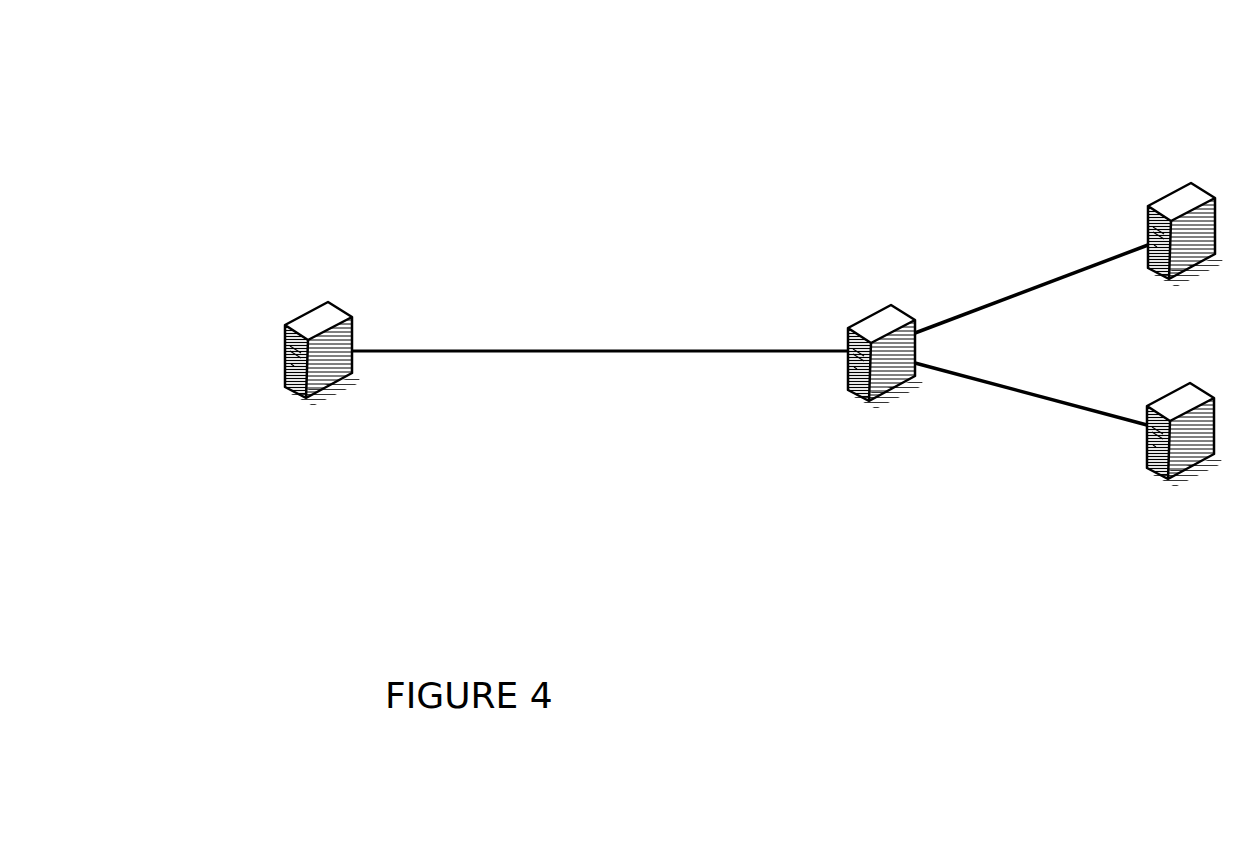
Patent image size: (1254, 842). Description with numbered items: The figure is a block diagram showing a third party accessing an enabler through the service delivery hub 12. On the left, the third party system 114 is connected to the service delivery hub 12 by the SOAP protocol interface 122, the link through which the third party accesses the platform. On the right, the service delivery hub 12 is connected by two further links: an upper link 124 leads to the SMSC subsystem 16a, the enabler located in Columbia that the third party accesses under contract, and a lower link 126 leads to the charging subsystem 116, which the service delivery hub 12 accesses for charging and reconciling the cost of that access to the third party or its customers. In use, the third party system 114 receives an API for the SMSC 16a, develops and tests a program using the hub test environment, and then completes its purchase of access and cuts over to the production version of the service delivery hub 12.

The third party system 114 is at (312, 318).
The service delivery hub 12 is at (870, 313).
The SMSC subsystem 16a is at (1187, 193).
The charging subsystem 116 is at (1147, 448).
The SOAP protocol interface 122 is at (617, 357).
The communication link 124 is at (1097, 258).
The communication link 126 is at (995, 380).